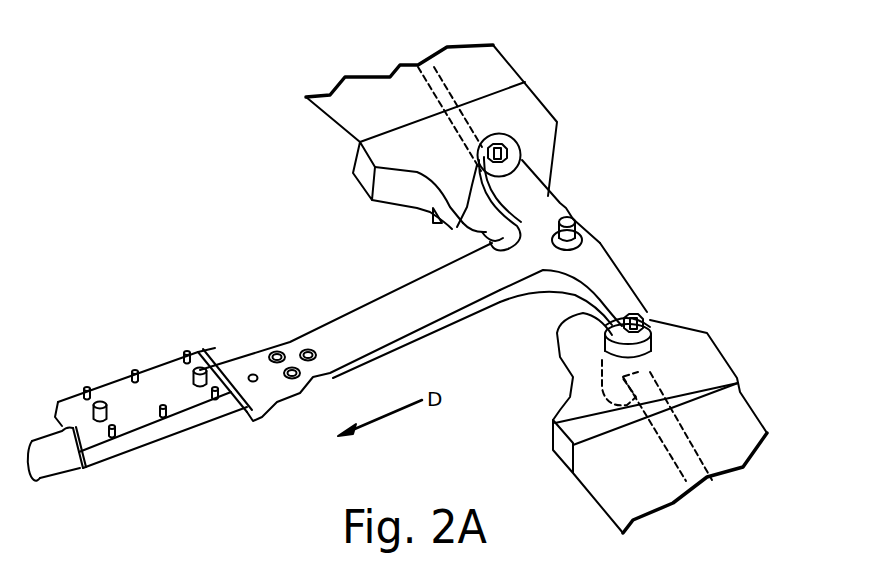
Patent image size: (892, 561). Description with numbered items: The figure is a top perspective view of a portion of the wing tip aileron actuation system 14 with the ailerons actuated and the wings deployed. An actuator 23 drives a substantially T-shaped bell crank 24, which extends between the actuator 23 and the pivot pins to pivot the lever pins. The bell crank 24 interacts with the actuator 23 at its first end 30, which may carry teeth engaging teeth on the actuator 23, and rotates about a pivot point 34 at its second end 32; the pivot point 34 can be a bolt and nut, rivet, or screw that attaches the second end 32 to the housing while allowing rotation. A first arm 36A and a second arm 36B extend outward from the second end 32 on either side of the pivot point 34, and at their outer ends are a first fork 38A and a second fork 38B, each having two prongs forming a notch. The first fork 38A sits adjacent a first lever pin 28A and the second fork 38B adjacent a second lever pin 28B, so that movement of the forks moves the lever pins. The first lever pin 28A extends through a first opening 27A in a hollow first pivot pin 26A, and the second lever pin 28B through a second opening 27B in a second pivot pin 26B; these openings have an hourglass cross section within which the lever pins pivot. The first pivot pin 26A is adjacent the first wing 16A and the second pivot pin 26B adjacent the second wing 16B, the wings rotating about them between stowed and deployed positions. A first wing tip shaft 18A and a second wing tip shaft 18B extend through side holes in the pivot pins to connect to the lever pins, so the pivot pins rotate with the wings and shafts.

The wing tip aileron actuation system 14 is at (169, 158).
The first wing 16A is at (627, 477).
The second wing 16B is at (360, 113).
The first wing tip shaft 18A is at (709, 485).
The second wing tip shaft 18B is at (410, 71).
The actuator 23 is at (127, 398).
The bell crank 24 is at (360, 322).
The first pivot pin 26A is at (608, 352).
The second pivot pin 26B is at (535, 160).
The first opening 27A is at (600, 362).
The second opening 27B is at (523, 185).
The first lever pin 28A is at (647, 313).
The second lever pin 28B is at (487, 140).
The first end 30 is at (230, 366).
The second end 32 is at (597, 243).
The pivot point 34 is at (578, 228).
The first arm 36A is at (620, 297).
The second arm 36B is at (527, 168).
The first fork 38A is at (603, 313).
The second fork 38B is at (457, 227).